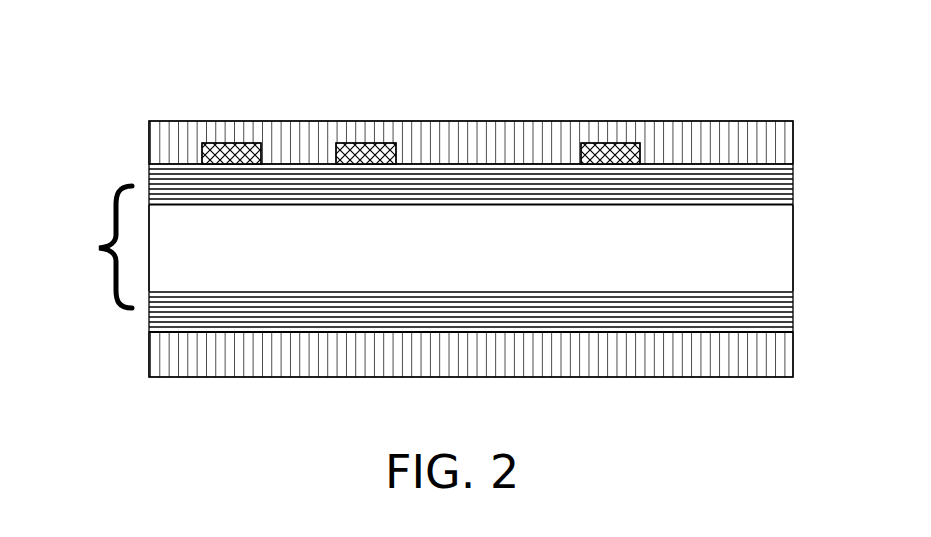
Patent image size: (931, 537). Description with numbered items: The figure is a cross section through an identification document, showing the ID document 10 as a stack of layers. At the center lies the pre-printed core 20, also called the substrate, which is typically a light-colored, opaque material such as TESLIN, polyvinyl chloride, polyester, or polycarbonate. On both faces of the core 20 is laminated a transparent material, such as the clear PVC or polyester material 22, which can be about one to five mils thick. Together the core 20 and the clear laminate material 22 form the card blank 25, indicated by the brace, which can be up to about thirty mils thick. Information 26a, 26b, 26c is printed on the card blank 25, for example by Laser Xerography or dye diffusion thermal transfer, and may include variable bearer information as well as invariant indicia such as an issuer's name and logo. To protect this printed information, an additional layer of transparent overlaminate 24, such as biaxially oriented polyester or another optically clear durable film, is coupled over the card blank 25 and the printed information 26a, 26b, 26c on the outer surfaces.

The ID document 10 is at (118, 135).
The pre-printed core 20 is at (794, 247).
The clear PVC or polyester material 22 is at (795, 174).
The transparent overlaminate 24 is at (732, 121).
The card blank 25 is at (94, 247).
The information 26a is at (240, 143).
The information 26b is at (372, 143).
The information 26c is at (611, 143).